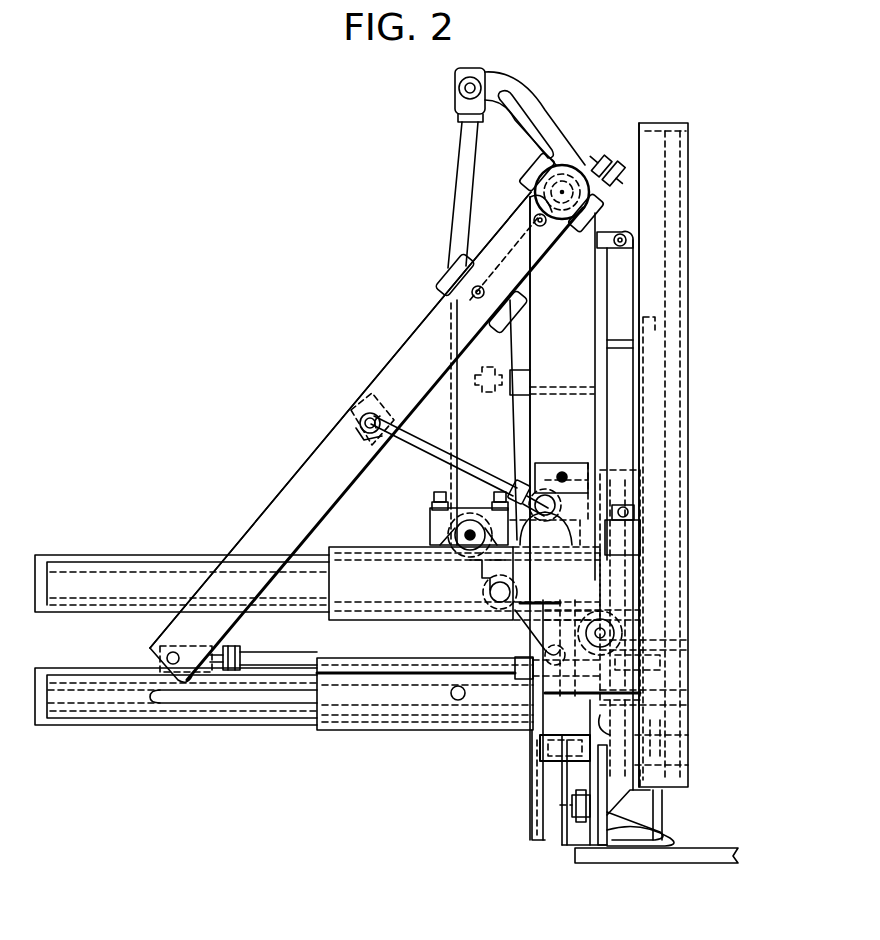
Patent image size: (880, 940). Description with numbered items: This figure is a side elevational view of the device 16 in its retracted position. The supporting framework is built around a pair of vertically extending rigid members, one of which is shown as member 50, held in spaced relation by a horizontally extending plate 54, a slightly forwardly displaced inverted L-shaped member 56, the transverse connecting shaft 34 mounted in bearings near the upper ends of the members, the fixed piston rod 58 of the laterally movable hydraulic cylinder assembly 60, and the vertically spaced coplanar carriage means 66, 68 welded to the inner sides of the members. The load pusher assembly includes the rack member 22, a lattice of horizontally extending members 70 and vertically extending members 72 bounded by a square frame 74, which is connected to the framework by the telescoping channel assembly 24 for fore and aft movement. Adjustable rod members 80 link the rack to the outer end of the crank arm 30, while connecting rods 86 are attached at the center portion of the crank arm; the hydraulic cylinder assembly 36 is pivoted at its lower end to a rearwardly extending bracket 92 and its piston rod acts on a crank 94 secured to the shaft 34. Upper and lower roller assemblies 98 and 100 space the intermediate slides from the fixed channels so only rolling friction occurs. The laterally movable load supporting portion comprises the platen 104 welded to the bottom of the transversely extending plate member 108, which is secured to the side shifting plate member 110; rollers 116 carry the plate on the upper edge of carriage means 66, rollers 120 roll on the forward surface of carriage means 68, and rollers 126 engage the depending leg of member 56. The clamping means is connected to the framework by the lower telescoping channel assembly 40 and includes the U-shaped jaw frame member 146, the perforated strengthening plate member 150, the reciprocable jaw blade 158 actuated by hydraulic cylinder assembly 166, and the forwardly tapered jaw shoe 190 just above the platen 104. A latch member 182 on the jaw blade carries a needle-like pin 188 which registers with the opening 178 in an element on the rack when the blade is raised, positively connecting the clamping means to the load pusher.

The device 16 is at (358, 371).
The rack member 22 is at (696, 322).
The telescoping channel assembly 24 is at (368, 542).
The crank arm 30 is at (287, 502).
The connecting shaft 34 is at (573, 165).
The hydraulic cylinder assembly 36 is at (458, 418).
The telescoping channel assembly 40 is at (346, 738).
The vertically extending rigid member 50 is at (553, 310).
The horizontally extending plate 54 is at (552, 388).
The inverted L-shaped member 56 is at (572, 473).
The fixed piston rod 58 is at (520, 500).
The hydraulic cylinder assembly 60 is at (466, 518).
The carriage means 66 is at (514, 657).
The carriage means 68 is at (548, 848).
The horizontally extending member 70 is at (688, 240).
The vertically extending member 72 is at (675, 302).
The square frame 74 is at (650, 232).
The adjustable rod member 80 is at (270, 648).
The connecting rod 86 is at (440, 455).
The bracket 92 is at (512, 624).
The crank 94 is at (515, 96).
The upper roller assembly 98 is at (430, 522).
The lower roller assembly 100 is at (632, 626).
The platen 104 is at (615, 860).
The transversely extending plate member 108 is at (575, 840).
The side shifting plate member 110 is at (540, 742).
The roller 116 is at (468, 588).
The roller 120 is at (570, 806).
The roller 126 is at (512, 470).
The jaw frame member 146 is at (650, 770).
The perforated strengthening plate member 150 is at (598, 860).
The jaw blade 158 is at (658, 812).
The hydraulic cylinder assembly 166 is at (650, 540).
The opening 178 is at (640, 644).
The latch member 182 is at (650, 740).
The needle-like pin 188 is at (645, 702).
The jaw shoe 190 is at (635, 835).